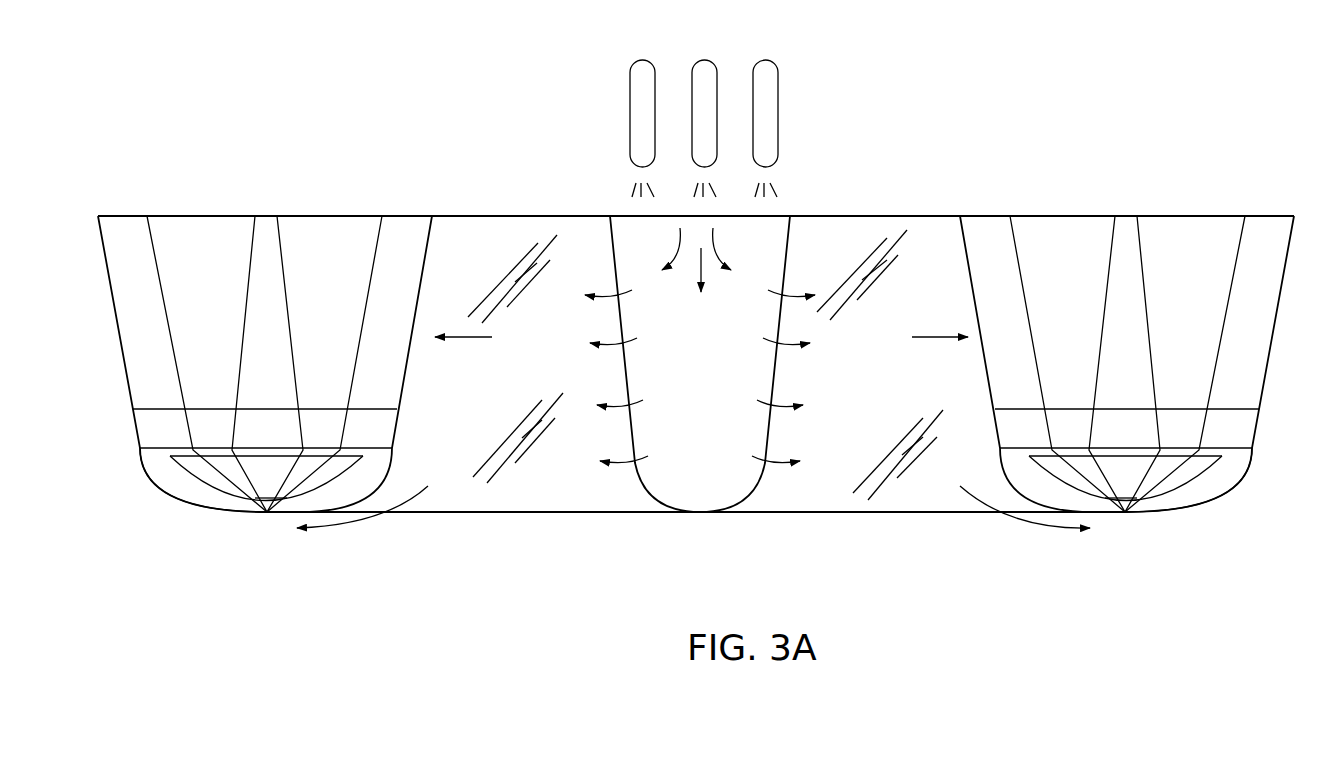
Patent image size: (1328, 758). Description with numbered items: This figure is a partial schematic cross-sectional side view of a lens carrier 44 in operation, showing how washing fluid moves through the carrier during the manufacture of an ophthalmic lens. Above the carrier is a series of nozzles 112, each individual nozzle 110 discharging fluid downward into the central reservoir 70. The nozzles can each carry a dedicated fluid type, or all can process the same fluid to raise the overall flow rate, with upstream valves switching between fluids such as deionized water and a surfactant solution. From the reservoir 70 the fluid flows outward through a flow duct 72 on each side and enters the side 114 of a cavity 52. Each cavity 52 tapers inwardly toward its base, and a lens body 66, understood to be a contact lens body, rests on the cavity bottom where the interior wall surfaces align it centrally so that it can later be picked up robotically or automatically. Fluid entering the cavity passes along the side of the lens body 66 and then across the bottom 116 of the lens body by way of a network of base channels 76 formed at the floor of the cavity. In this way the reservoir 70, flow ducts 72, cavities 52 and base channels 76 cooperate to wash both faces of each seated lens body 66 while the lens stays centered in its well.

The lens carrier 44 is at (1095, 197).
The cavity 52 is at (196, 228).
The lens body 66 is at (343, 455).
The reservoir 70 is at (777, 230).
The flow duct 72 is at (470, 235).
The base channels 76 is at (195, 503).
The nozzle 110 is at (630, 107).
The series of nozzles 112 is at (739, 47).
The side of the cavity 114 is at (467, 340).
The bottom of the lens body 116 is at (372, 527).